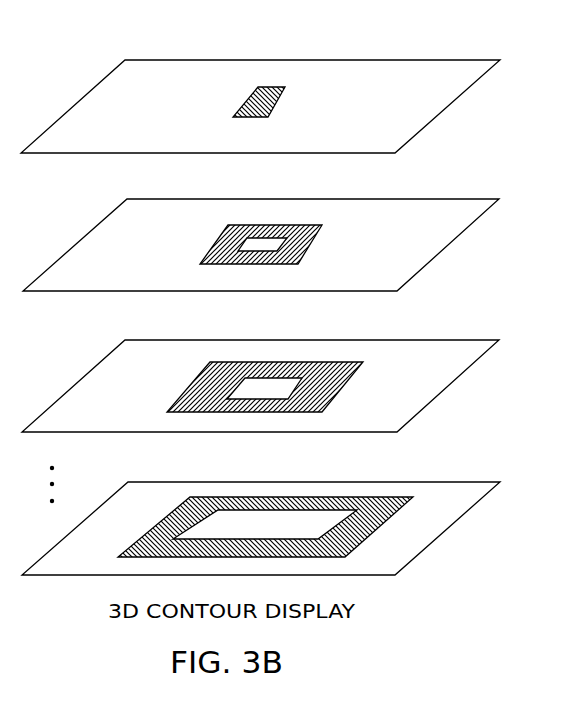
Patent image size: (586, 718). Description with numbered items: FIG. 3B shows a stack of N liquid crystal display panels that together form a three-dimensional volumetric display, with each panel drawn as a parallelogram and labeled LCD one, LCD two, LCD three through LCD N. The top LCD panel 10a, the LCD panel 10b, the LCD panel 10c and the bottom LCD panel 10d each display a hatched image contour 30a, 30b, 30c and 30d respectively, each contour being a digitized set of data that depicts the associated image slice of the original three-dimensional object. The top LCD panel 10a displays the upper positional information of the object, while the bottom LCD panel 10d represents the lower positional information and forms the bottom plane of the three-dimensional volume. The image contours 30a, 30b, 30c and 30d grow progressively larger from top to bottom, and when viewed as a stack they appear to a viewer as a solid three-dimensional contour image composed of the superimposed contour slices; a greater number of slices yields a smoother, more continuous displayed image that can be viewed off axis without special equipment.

The top LCD panel 10a is at (460, 96).
The LCD panel 10b is at (467, 231).
The LCD panel 10c is at (468, 372).
The bottom LCD panel 10d is at (462, 515).
The image contour 30a is at (258, 87).
The image contour 30b is at (256, 225).
The image contour 30c is at (279, 362).
The image contour 30d is at (280, 497).